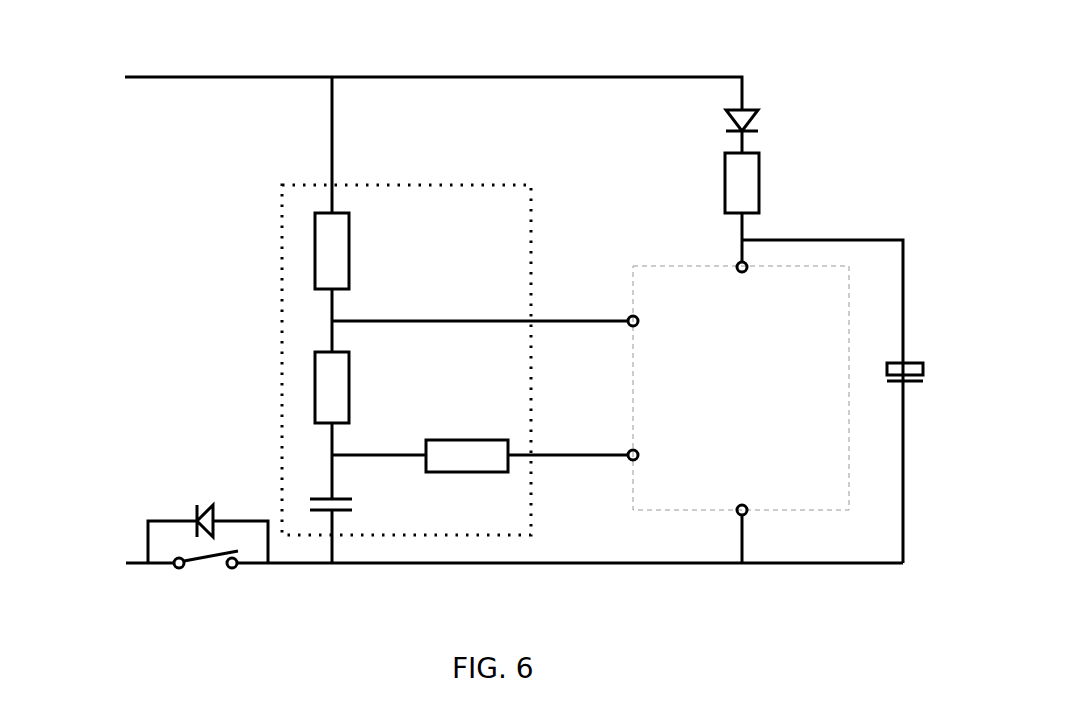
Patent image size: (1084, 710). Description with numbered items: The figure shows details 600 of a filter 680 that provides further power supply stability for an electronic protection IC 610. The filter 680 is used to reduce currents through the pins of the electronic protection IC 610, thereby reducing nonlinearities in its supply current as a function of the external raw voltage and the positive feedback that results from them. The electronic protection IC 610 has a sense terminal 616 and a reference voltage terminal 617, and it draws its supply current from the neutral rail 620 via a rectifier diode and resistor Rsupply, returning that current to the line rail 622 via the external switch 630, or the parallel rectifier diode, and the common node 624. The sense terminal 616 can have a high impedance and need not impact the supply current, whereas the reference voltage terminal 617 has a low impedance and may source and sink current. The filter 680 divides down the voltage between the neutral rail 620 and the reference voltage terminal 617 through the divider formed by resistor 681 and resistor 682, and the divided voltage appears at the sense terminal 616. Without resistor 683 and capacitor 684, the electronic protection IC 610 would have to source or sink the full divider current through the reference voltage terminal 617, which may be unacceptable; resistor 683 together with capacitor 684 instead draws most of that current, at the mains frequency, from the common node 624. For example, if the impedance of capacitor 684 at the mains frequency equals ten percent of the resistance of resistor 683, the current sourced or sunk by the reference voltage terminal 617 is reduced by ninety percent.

The details 600 is at (173, 42).
The electronic protection IC 610 is at (741, 388).
The sense terminal 616 is at (630, 315).
The reference voltage terminal 617 is at (630, 447).
The neutral rail 620 is at (225, 77).
The line rail 622 is at (130, 568).
The common node 624 is at (676, 567).
The external switch 630 is at (215, 570).
The filter 680 is at (520, 185).
The resistor R1 681 is at (353, 250).
The resistor R2 682 is at (353, 373).
The resistor R3 683 is at (478, 440).
The capacitor C1 684 is at (357, 505).